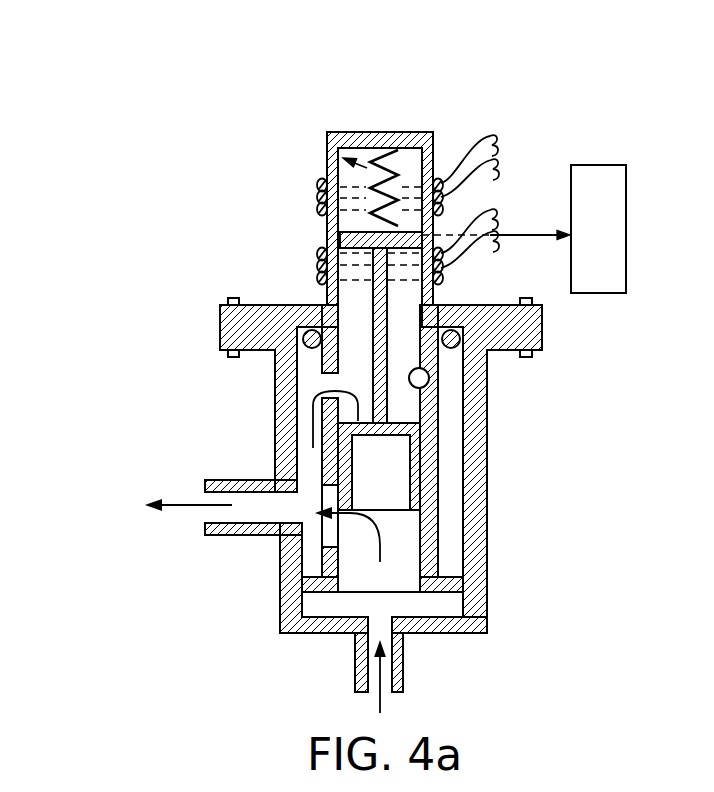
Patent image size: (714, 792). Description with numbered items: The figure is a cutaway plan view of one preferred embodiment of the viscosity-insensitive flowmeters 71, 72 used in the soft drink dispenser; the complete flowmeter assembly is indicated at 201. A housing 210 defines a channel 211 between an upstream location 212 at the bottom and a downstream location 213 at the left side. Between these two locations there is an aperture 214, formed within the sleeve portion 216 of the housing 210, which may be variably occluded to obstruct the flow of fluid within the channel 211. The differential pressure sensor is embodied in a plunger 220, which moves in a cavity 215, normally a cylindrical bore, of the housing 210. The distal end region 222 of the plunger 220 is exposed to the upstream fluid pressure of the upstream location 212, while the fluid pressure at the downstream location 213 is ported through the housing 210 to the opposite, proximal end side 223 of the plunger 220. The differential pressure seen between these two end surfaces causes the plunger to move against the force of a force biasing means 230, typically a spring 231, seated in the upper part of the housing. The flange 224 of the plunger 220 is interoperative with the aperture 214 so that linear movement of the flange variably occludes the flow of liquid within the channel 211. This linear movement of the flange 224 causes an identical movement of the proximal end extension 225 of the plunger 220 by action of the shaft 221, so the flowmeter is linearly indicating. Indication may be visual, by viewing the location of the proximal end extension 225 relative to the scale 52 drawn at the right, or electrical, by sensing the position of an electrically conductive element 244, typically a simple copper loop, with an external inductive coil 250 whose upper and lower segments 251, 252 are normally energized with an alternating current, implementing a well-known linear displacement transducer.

The viscosity-insensitive flowmeter 71 is at (127, 64).
The viscosity-insensitive flowmeter 72 is at (212, 98).
The pressure relief valve assembly 201 is at (296, 90).
The force biasing means 230 is at (337, 132).
The spring 231 is at (400, 150).
The electrically conductive element 244 is at (340, 235).
The scale 52 is at (607, 165).
The external inductive coil 250 is at (315, 180).
The upper segment of electrical coil 251 is at (317, 203).
The lower segment of electrical coil 252 is at (318, 252).
The proximal end extension 225 is at (441, 200).
The housing 210 is at (267, 300).
The downstream location 213 is at (220, 532).
The channel 211 is at (272, 477).
The aperture 214 is at (330, 530).
The plunger 220 is at (433, 427).
The shaft 221 is at (402, 314).
The proximal end side 223 is at (350, 384).
The sleeve portion 216 is at (315, 420).
The cavity 215 is at (440, 392).
The flange 224 is at (377, 436).
The distal end region 222 is at (400, 473).
The upstream location 212 is at (387, 677).